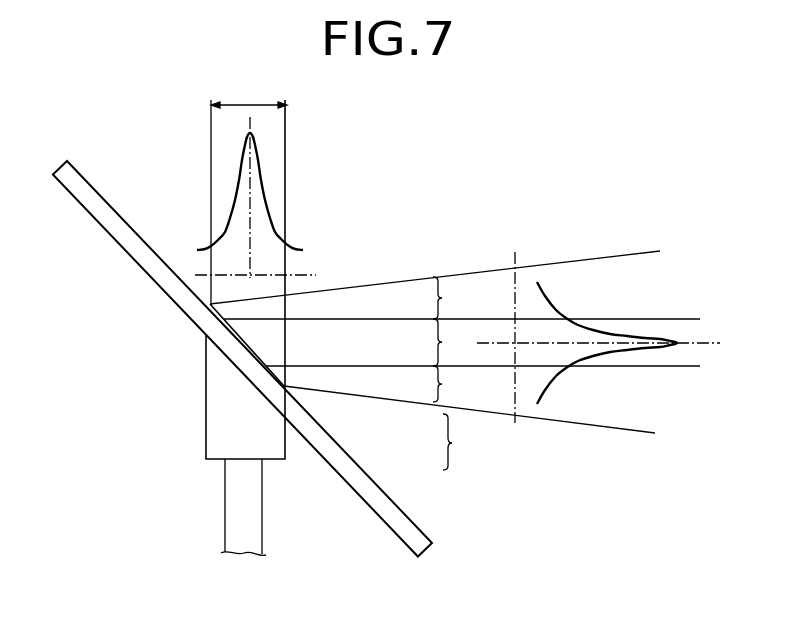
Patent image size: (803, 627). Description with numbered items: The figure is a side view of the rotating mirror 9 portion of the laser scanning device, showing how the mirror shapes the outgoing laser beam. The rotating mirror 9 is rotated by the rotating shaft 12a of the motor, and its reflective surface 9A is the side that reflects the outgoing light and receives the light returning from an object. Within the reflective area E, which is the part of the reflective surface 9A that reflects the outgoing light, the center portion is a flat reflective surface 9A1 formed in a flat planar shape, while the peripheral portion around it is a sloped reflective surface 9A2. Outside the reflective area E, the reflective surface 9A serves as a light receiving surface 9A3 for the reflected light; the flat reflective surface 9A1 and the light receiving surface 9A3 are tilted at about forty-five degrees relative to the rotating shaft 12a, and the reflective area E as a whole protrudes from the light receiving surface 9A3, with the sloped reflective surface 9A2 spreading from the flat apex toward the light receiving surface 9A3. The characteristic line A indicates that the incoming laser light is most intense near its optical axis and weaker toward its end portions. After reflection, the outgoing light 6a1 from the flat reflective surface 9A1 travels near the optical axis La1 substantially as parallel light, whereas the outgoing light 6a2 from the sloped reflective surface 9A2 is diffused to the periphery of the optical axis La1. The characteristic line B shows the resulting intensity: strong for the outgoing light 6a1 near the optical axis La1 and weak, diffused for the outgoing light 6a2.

The reflective area E is at (249, 96).
The characteristic line A is at (265, 204).
The rotating mirror 9 is at (421, 553).
The reflective surface 9A is at (462, 442).
The flat reflective surface 9A1 is at (258, 345).
The sloped reflective surface 9A2 is at (280, 372).
The light receiving surface 9A3 is at (358, 463).
The rotating shaft 12a is at (262, 521).
The outgoing light near the optical axis 6a1 is at (462, 342).
The outgoing light in the end portion 6a2 is at (435, 342).
The optical axis La1 is at (479, 342).
The characteristic line B is at (620, 360).